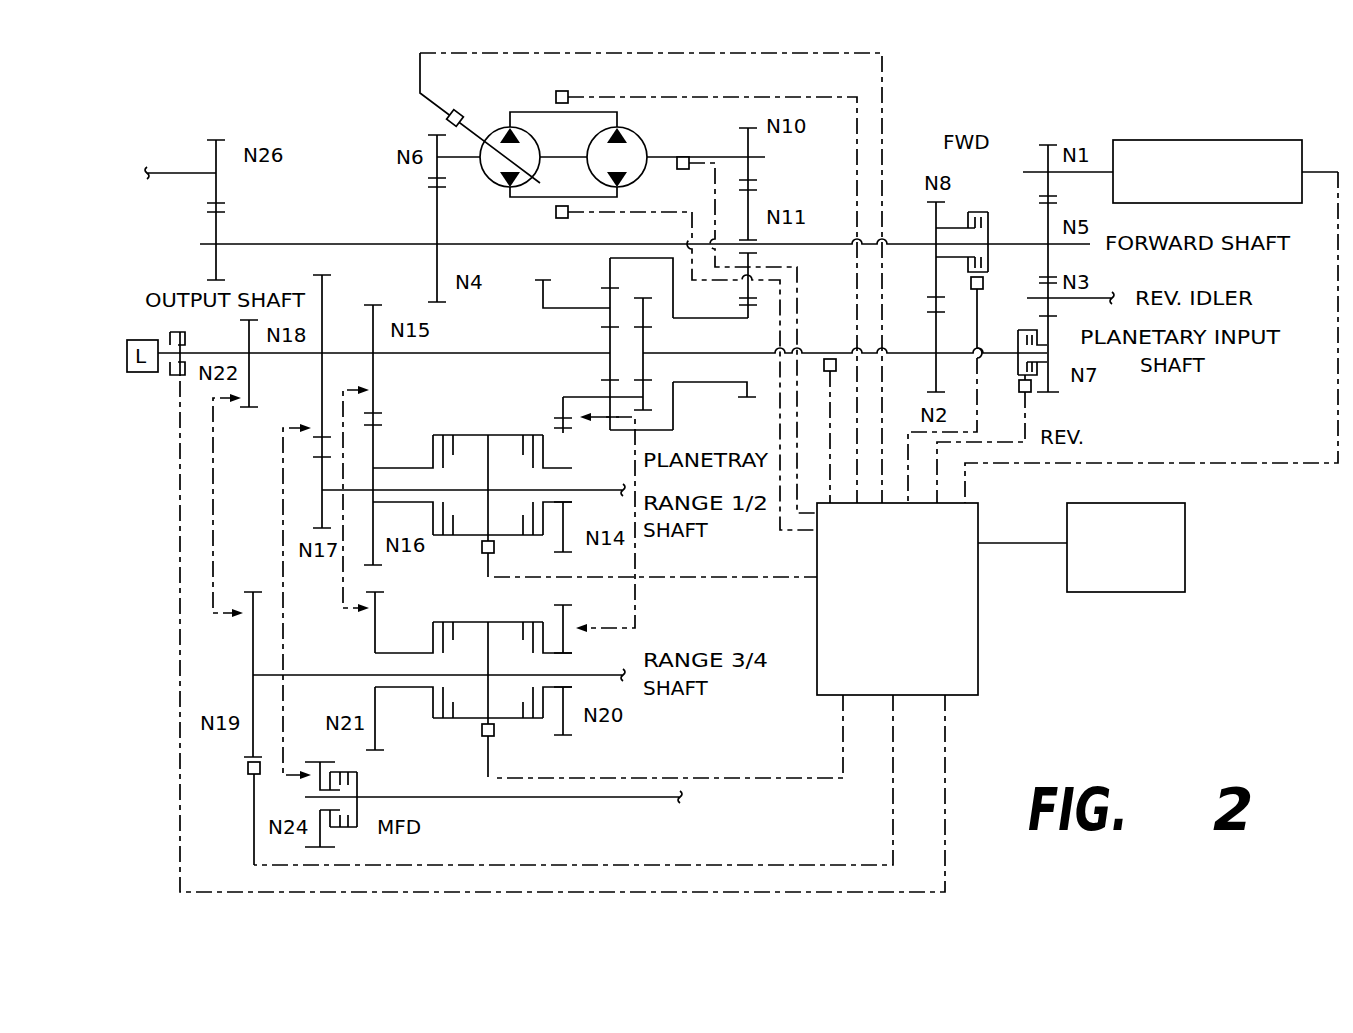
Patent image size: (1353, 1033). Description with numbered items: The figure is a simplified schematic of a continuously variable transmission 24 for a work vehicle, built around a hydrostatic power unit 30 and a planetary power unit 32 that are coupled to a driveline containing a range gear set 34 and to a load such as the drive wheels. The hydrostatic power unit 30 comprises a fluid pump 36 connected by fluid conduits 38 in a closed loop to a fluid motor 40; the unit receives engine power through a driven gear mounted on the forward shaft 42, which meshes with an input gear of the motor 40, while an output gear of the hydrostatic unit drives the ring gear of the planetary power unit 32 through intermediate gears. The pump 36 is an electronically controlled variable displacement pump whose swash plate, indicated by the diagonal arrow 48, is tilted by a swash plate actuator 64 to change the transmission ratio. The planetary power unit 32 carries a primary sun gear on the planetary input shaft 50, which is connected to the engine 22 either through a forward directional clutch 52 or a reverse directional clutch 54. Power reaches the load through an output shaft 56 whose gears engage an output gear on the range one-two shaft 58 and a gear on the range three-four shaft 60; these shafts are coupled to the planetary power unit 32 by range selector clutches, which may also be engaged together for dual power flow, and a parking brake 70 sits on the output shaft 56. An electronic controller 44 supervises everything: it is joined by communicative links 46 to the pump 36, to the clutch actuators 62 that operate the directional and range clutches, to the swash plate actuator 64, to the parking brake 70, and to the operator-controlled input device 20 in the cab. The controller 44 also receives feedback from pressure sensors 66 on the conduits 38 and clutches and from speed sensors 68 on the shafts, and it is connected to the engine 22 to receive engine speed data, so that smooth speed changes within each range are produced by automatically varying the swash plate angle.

The operator-controlled input device 20 is at (1185, 548).
The engine 22 is at (1302, 150).
The continuously variable transmission 24 is at (1084, 123).
The hydrostatic power unit 30 is at (562, 147).
The planetary power unit 32 is at (512, 366).
The range gear set 34 is at (660, 588).
The fluid pump 36 is at (500, 187).
The fluid conduits 38 is at (620, 122).
The fluid motor 40 is at (647, 147).
The forward shaft 42 is at (278, 243).
The electronic controller 44 is at (978, 663).
The communicative link 46 is at (860, 143).
The diagonal arrow 48 is at (500, 188).
The planetary input shaft 50 is at (713, 352).
The forward directional clutch 52 is at (970, 212).
The reverse directional clutch 54 is at (1043, 370).
The output shaft 56 is at (305, 356).
The range 1/2 shaft 58 is at (580, 488).
The range 3/4 shaft 60 is at (298, 673).
The actuators 62 is at (984, 286).
The swash plate actuator 64 is at (422, 115).
The pressure sensors 66 is at (553, 95).
The speed sensors 68 is at (677, 164).
The parking brake 70 is at (186, 343).